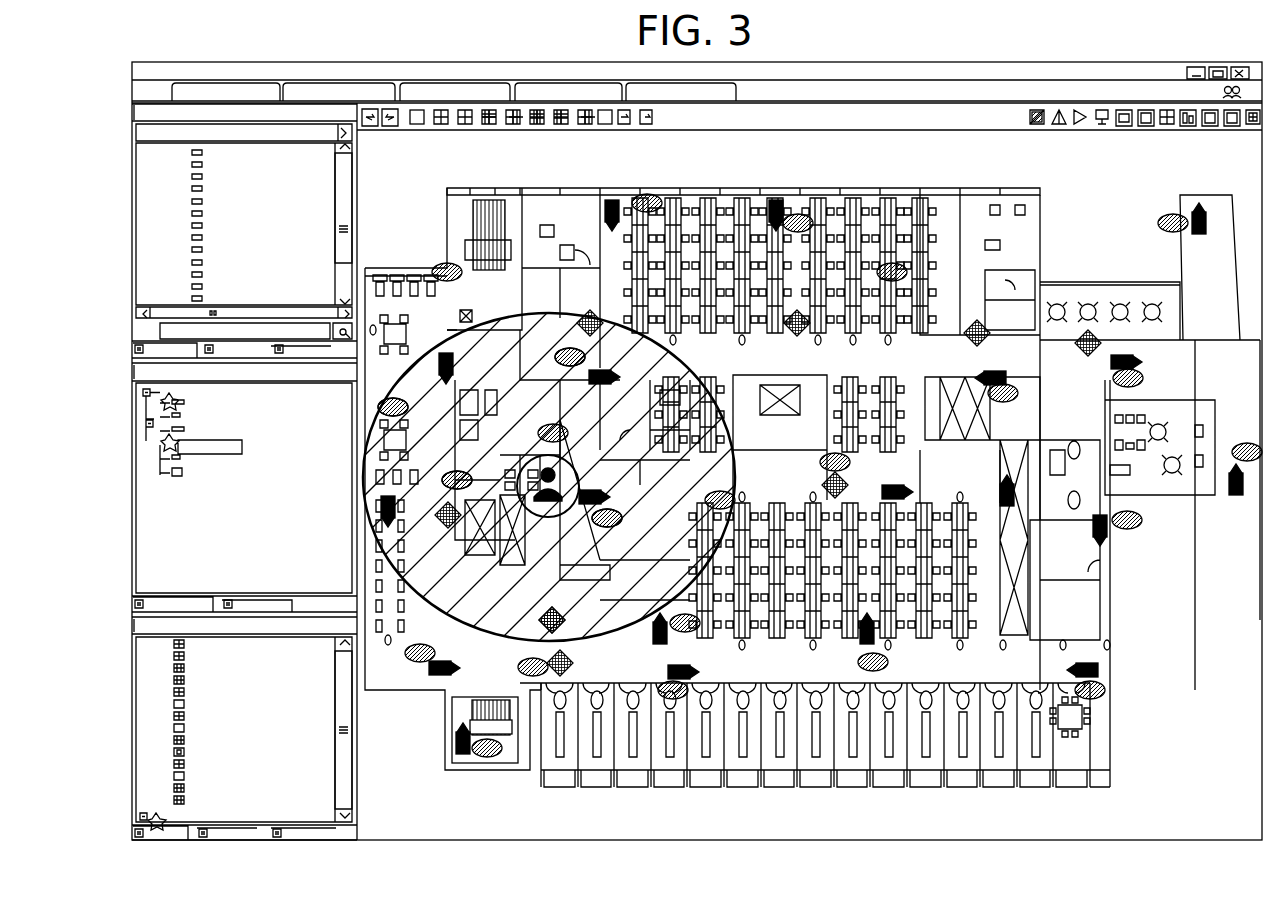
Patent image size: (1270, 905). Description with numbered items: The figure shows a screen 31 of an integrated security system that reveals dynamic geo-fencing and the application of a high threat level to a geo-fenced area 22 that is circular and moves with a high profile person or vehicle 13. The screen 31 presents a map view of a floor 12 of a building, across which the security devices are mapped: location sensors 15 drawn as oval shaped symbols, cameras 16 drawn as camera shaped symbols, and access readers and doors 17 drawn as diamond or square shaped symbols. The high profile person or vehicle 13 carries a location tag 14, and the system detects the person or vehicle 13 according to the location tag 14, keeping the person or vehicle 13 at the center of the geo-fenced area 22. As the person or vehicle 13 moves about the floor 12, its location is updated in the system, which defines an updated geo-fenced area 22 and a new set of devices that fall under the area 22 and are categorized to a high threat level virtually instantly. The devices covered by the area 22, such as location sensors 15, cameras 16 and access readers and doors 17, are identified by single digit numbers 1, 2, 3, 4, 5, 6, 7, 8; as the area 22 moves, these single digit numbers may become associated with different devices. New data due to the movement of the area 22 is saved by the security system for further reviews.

The screen 31 is at (1192, 52).
The floor 12 is at (723, 190).
The geo-fenced area 22 is at (685, 354).
The high profile person or vehicle 13 is at (568, 479).
The location tag 14 is at (578, 492).
The location sensors 15 is at (795, 199).
The cameras 16 is at (612, 226).
The access readers and doors 17 is at (799, 335).
The logical device identifier 1 is at (433, 382).
The logical device identifier 2 is at (396, 511).
The logical device identifier 3 is at (550, 611).
The logical device identifier 4 is at (607, 528).
The logical device identifier 5 is at (462, 486).
The logical device identifier 6 is at (453, 368).
The logical device identifier 7 is at (562, 350).
The logical device identifier 8 is at (609, 369).